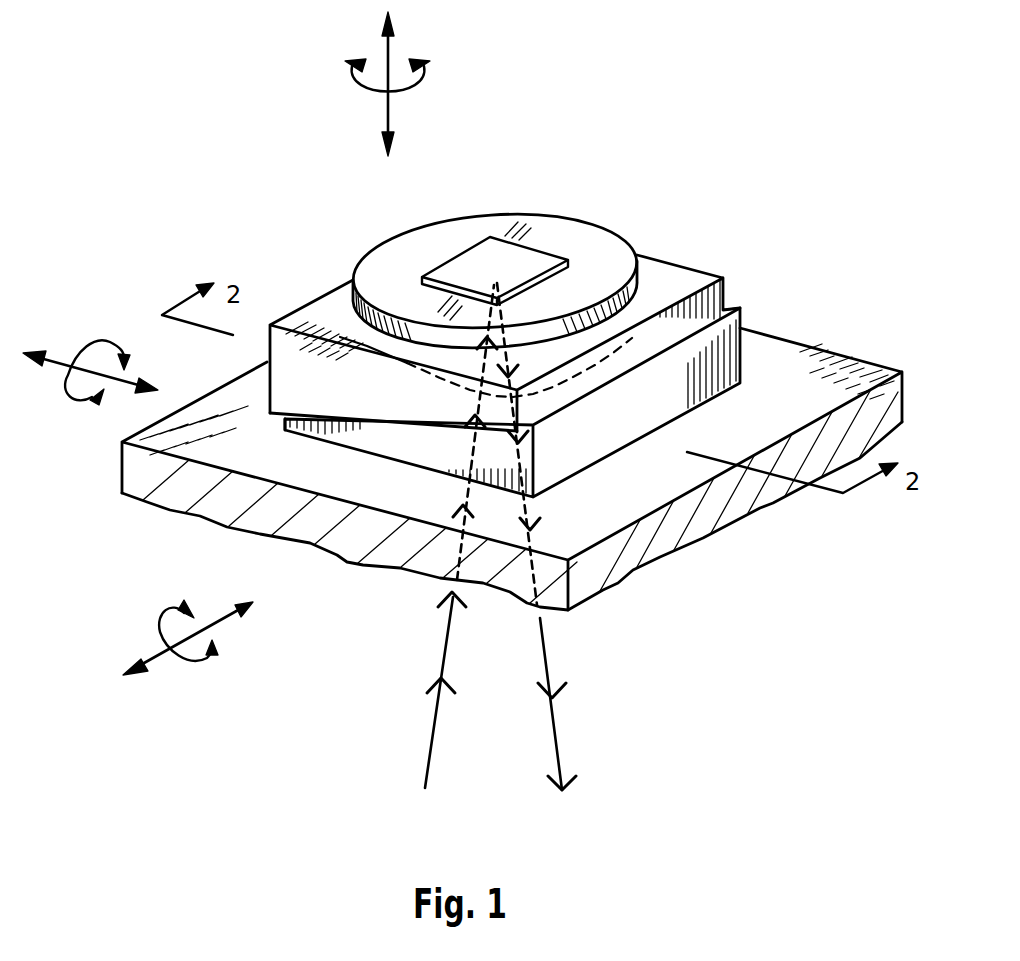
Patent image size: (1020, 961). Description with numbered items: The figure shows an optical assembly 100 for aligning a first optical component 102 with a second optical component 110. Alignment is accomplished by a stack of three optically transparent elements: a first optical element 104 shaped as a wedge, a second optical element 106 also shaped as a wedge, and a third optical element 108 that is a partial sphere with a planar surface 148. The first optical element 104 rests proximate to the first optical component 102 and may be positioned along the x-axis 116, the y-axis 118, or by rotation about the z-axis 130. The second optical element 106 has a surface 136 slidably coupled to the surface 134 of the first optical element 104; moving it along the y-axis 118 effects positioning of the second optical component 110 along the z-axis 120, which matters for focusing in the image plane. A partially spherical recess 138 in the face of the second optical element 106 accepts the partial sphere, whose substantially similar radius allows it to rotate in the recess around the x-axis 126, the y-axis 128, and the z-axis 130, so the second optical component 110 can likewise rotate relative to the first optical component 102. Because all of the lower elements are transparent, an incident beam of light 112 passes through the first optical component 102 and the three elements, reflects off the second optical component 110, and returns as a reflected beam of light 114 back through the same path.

The optical assembly 100 is at (328, 201).
The first optical component 102 is at (680, 525).
The first optical element 104 is at (573, 435).
The second optical element 106 is at (692, 388).
The third optical element 108 is at (357, 313).
The second optical component 110 is at (487, 258).
The incident beam of light 112 is at (428, 745).
The reflected beam of light 114 is at (557, 733).
The x-axis 116 is at (225, 620).
The y-axis 118 is at (125, 375).
The z-axis 120 is at (390, 116).
The rotation about the x-axis 126 is at (198, 670).
The rotation about the y-axis 128 is at (107, 340).
The rotation about the z-axis 130 is at (430, 77).
The surface of the first optical element 134 is at (727, 302).
The surface of the second optical element 136 is at (280, 413).
The partially spherical recess 138 is at (560, 376).
The planar surface 148 is at (570, 240).